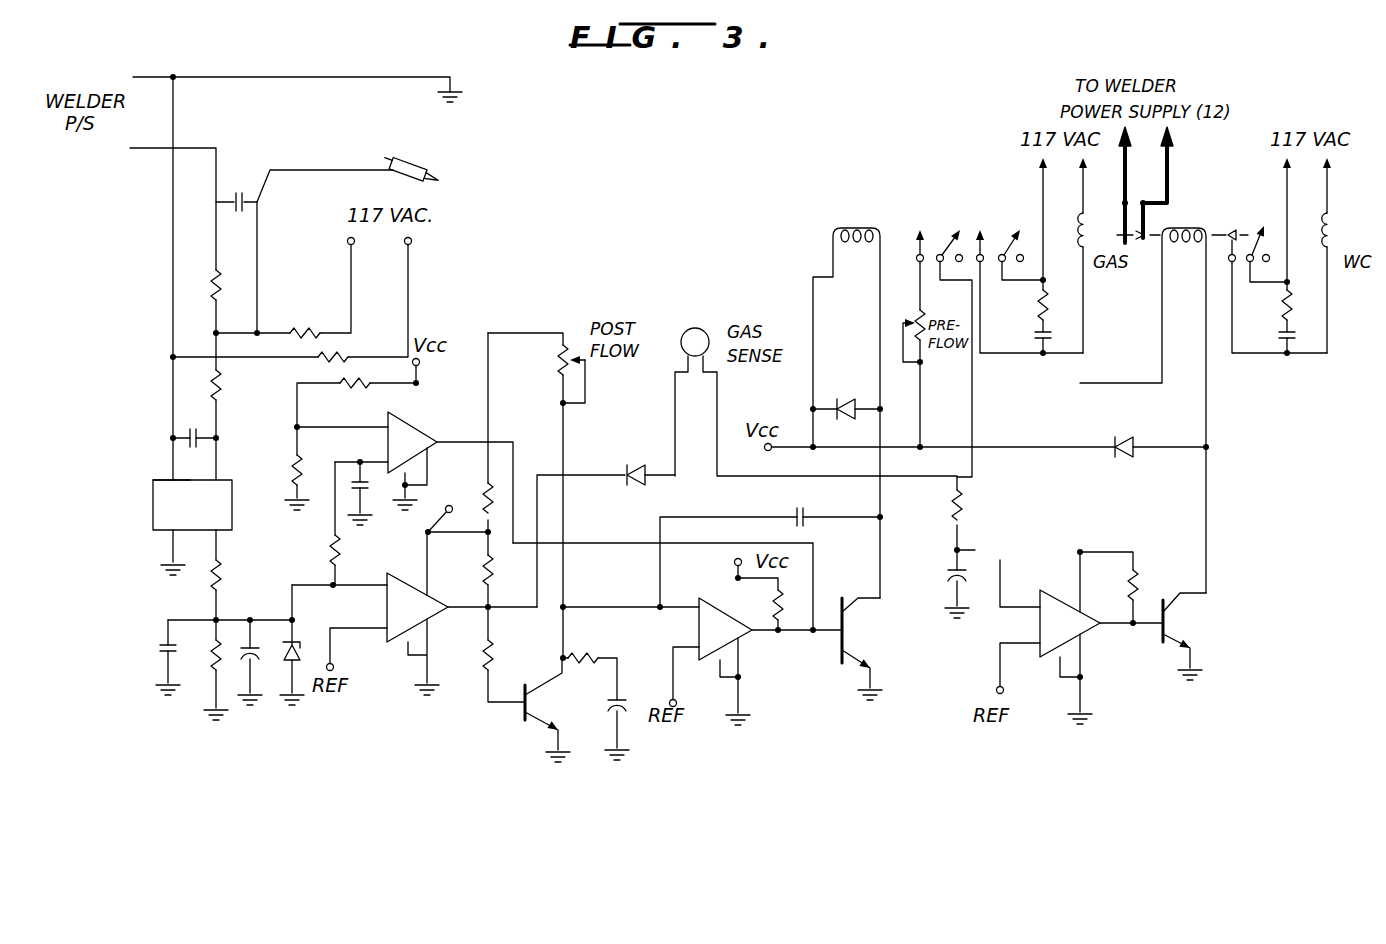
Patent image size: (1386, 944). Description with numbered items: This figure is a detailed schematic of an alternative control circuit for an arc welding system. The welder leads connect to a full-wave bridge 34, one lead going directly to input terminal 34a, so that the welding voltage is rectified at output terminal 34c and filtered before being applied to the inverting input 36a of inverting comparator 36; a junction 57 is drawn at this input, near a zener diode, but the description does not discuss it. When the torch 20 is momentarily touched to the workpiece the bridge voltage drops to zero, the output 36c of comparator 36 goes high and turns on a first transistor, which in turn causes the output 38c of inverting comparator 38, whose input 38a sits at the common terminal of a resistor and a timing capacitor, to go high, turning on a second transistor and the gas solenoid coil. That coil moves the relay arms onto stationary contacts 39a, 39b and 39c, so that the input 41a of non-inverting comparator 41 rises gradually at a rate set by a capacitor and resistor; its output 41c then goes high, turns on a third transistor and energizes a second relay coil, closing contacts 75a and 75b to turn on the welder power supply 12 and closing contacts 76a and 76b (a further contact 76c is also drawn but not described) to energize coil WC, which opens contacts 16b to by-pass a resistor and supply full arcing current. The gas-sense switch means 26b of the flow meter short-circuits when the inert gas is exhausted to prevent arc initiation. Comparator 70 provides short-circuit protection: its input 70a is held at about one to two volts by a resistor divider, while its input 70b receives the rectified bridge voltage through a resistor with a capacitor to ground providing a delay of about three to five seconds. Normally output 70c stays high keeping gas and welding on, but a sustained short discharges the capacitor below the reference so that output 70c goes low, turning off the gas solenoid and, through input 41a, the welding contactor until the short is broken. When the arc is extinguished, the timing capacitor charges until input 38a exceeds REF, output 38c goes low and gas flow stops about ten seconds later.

The welder power supply 12 is at (1146, 185).
The contacts 16b is at (237, 190).
The torch 20 is at (478, 158).
The switch means 26b is at (710, 315).
The full-wave bridge 34 is at (148, 510).
The input terminal 34a is at (165, 480).
The output terminal 34c is at (219, 545).
The inverting comparator 36 is at (396, 650).
The inverting input 36a is at (383, 588).
The output 36c is at (460, 607).
The inverting comparator 38 is at (690, 624).
The input 38a is at (697, 603).
The output 38c is at (762, 636).
The stationary contact 39a is at (920, 232).
The stationary contact 39b is at (985, 245).
The stationary contact 39c is at (952, 225).
The non-inverting comparator 41 is at (1056, 582).
The input 41a is at (1026, 610).
The output 41c is at (1098, 630).
The junction 57 is at (290, 612).
The comparator 70 is at (418, 422).
The input 70a is at (372, 428).
The input terminal 70b is at (372, 462).
The output 70c is at (437, 442).
The contact 75a is at (1118, 235).
The contact 75b is at (1150, 230).
The contact 76a is at (1234, 232).
The contact 76b is at (1262, 245).
The relay contact 76c is at (1260, 222).